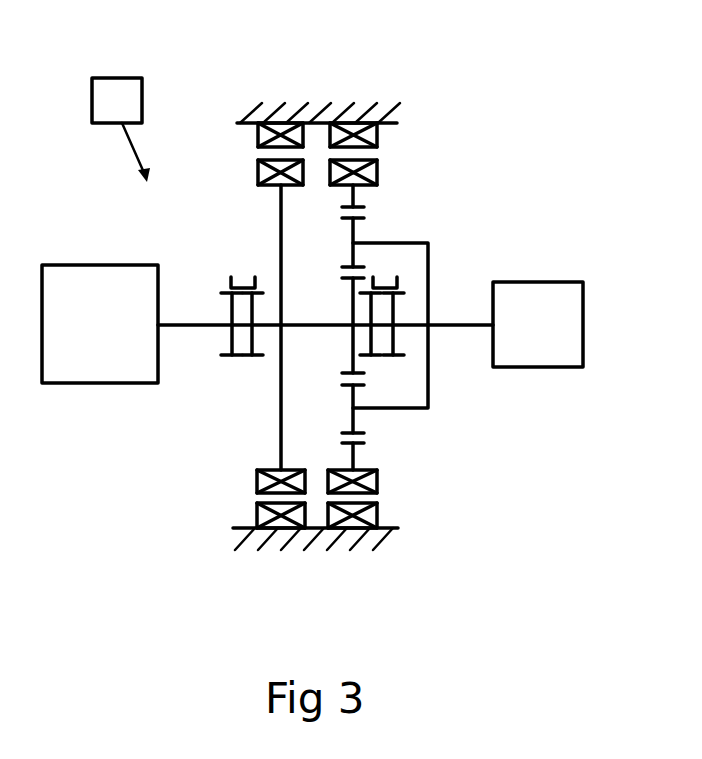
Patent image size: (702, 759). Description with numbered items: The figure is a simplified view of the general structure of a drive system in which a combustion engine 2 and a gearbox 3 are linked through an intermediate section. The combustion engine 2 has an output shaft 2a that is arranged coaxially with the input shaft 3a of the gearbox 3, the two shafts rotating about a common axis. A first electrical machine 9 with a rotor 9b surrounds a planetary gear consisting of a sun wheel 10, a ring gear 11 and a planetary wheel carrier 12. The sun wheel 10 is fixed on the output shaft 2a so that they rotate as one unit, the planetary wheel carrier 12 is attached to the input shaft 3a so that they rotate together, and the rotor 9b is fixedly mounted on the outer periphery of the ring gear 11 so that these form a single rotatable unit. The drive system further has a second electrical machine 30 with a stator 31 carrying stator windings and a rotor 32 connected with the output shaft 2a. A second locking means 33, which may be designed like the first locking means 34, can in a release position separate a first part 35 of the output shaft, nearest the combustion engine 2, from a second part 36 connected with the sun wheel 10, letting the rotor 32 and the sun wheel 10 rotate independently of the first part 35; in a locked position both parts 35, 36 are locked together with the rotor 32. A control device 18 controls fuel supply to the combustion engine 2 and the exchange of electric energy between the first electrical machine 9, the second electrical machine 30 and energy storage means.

The combustion engine 2 is at (88, 383).
The output shaft of the combustion engine 2a is at (312, 326).
The gearbox 3 is at (540, 282).
The input shaft of the gearbox 3a is at (462, 326).
The first electrical machine 9 is at (402, 152).
The rotor 9b is at (330, 187).
The sun wheel 10 is at (348, 322).
The ring gear 11 is at (375, 191).
The planetary wheel carrier 12 is at (428, 300).
The control device 18 is at (110, 87).
The second electrical machine 30 is at (242, 154).
The stator 31 is at (257, 516).
The rotor 32 is at (257, 475).
The second locking means 33 is at (240, 275).
The first locking means 34 is at (385, 276).
The first part of the combustion engine's output shaft 35 is at (200, 326).
The second part of the combustion engine's output shaft 36 is at (268, 326).